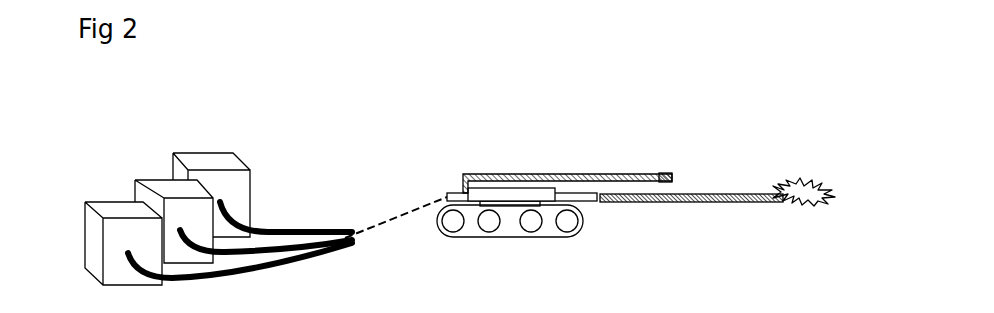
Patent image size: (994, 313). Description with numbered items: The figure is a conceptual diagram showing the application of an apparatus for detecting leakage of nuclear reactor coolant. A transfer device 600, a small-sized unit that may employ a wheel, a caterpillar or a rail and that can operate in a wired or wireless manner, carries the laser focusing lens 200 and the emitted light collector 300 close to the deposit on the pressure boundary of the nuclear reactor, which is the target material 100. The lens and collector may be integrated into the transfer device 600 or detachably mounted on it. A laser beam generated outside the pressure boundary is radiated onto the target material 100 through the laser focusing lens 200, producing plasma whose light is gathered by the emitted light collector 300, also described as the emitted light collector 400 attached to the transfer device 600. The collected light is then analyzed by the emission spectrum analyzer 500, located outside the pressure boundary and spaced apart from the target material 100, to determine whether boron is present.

The target material 100 is at (802, 195).
The laser focusing lens 200 is at (235, 194).
The emitted light collector 300 is at (598, 200).
The emitted light collector 400 is at (658, 175).
The emission spectrum analyzer 500 is at (172, 208).
The transfer device 600 is at (522, 212).